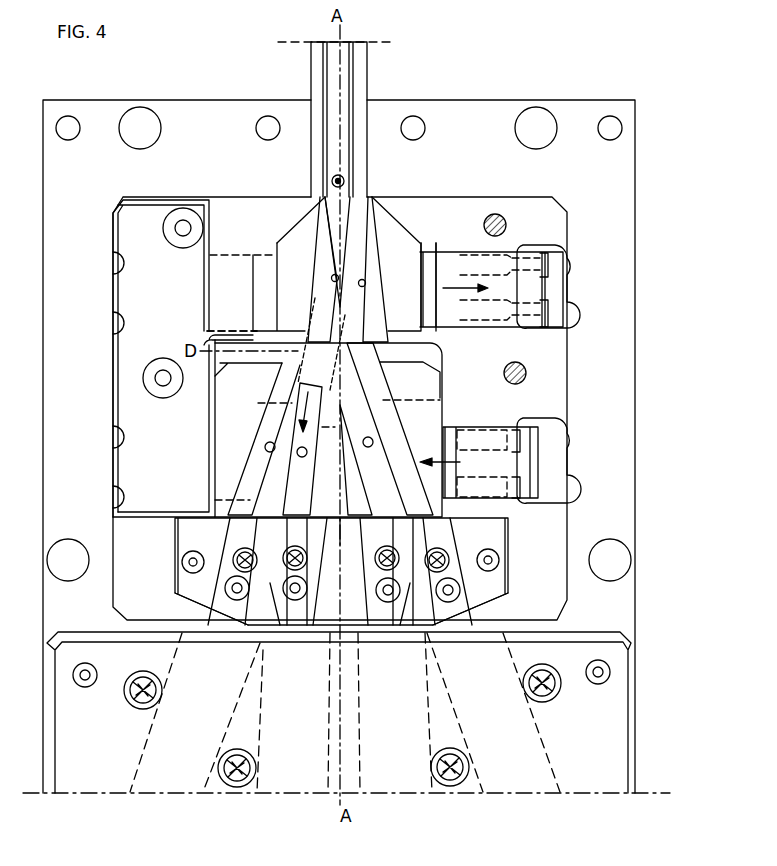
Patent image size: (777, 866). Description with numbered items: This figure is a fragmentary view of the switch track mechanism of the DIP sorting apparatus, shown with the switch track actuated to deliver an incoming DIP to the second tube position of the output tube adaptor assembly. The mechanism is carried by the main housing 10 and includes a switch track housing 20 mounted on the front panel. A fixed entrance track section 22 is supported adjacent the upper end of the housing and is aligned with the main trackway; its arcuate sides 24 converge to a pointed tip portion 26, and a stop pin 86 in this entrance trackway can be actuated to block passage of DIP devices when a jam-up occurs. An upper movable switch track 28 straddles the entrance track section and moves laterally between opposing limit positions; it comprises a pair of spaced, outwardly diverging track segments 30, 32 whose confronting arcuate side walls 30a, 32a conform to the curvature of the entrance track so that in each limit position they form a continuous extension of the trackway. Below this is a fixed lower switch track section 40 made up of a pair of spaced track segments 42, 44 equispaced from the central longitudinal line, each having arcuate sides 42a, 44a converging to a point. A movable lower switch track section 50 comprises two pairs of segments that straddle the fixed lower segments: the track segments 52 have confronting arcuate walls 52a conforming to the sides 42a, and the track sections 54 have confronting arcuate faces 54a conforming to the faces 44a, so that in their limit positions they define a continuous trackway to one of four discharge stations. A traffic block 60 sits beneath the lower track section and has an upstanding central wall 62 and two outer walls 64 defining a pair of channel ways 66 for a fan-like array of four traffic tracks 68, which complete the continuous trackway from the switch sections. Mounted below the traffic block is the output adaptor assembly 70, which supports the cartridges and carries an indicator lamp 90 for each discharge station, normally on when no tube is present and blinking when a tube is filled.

The main housing 10 is at (622, 174).
The switch track housing 20 is at (460, 203).
The fixed entrance track section 22 is at (358, 171).
The arcuate sides 24 is at (328, 238).
The pointed tip portion 26 is at (347, 307).
The upper movable switch track 28 is at (290, 268).
The track segment 30 is at (323, 257).
The confronting arcuate side wall 30a is at (257, 303).
The track segment 32 is at (375, 252).
The confronting arcuate side wall 32a is at (365, 283).
The fixed lower switch track section 40 is at (425, 347).
The track segment 42 is at (280, 388).
The arcuate sides 42a is at (293, 446).
The track segment 44 is at (380, 385).
The arcuate sides 44a is at (372, 440).
The movable lower switch track section 50 is at (227, 462).
The track segments 52 is at (293, 485).
The confronting arcuate walls 52a is at (298, 452).
The track sections 54 is at (368, 465).
The confronting arcuate faces 54a is at (388, 443).
The traffic block 60 is at (186, 531).
The upstanding central wall 62 is at (341, 545).
The outer walls 64 is at (186, 578).
The channel ways 66 is at (257, 518).
The traffic tracks 68 is at (231, 600).
The output adaptor assembly 70 is at (68, 733).
The stop pin 86 is at (331, 181).
The indicator lamp 90 is at (130, 706).